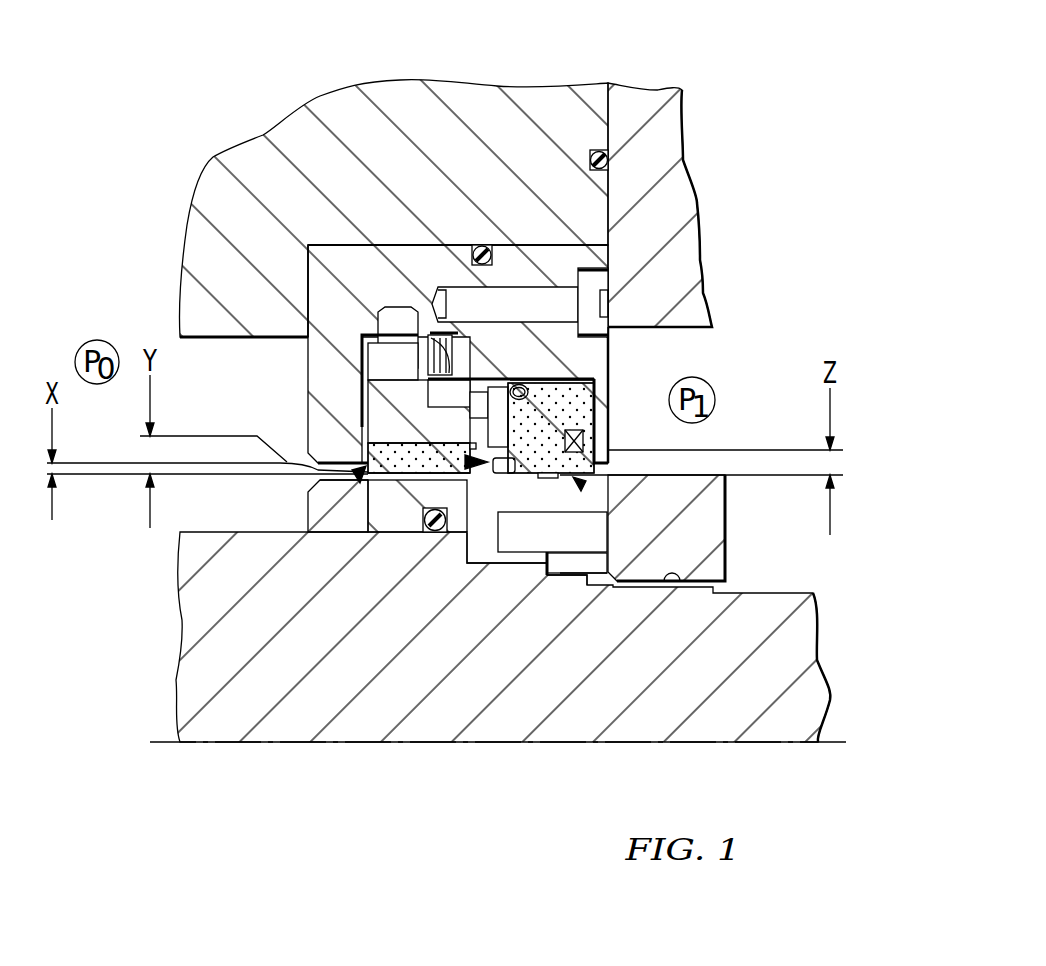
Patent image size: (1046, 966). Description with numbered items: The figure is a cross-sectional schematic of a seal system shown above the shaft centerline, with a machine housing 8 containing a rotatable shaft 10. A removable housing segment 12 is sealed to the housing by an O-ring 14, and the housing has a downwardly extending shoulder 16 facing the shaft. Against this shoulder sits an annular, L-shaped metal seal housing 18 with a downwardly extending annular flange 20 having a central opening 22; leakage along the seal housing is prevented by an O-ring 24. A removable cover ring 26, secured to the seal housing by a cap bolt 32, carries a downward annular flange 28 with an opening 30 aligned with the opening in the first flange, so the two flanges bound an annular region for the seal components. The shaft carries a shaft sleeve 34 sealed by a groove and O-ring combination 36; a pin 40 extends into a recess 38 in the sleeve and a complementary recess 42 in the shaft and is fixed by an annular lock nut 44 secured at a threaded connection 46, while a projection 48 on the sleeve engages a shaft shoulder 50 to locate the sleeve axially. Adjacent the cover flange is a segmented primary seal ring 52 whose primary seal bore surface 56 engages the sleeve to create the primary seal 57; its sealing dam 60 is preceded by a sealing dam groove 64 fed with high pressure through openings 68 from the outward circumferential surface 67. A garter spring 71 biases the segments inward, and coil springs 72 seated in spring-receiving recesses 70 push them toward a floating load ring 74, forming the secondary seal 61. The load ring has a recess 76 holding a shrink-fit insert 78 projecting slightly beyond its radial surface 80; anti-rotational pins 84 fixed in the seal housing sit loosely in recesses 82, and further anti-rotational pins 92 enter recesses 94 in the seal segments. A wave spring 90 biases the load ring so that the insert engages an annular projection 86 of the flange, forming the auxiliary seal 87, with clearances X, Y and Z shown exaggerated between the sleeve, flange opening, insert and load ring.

The machine housing 8 is at (406, 64).
The shaft 10 is at (762, 712).
The removable housing segment 12 is at (641, 68).
The O-ring 14 is at (590, 160).
The shoulder 16 is at (308, 278).
The seal housing 18 is at (347, 252).
The annular flange 20 is at (308, 397).
The central opening 22 is at (305, 465).
The O-ring 24 is at (478, 246).
The cover ring 26 is at (608, 352).
The annular flange 28 is at (602, 426).
The opening 30 is at (690, 466).
The cap bolt 32 is at (508, 292).
The shaft sleeve 34 is at (322, 534).
The groove and O-ring combination 36 is at (437, 533).
The recess 38 is at (546, 513).
The pin 40 is at (518, 540).
The recess 42 is at (490, 566).
The lock nut 44 is at (700, 541).
The threaded connection 46 is at (673, 587).
The projection 48 is at (572, 567).
The shaft shoulder 50 is at (548, 578).
The segmented primary seal ring 52 is at (610, 378).
The primary seal bore surface 56 is at (527, 482).
The primary seal 57 is at (582, 486).
The sealing dam 60 is at (492, 472).
The secondary seal 61 is at (464, 474).
The sealing dam groove 64 is at (566, 456).
The outward circumferential surface 67 is at (555, 378).
The openings 68 is at (528, 395).
The spring-receiving recesses 70 is at (604, 414).
The garter spring 71 is at (519, 384).
The coil springs 72 is at (620, 445).
The floating load ring 74 is at (386, 398).
The recess 76 is at (425, 446).
The insert 78 is at (390, 500).
The radial surface 80 is at (362, 412).
The recesses 82 is at (368, 372).
The anti-rotational pin 84 is at (380, 320).
The annular projection 86 is at (356, 481).
The auxiliary seal 87 is at (358, 484).
The wave spring 90 is at (440, 334).
The anti-rotational pins 92 is at (466, 358).
The recesses 94 is at (512, 452).